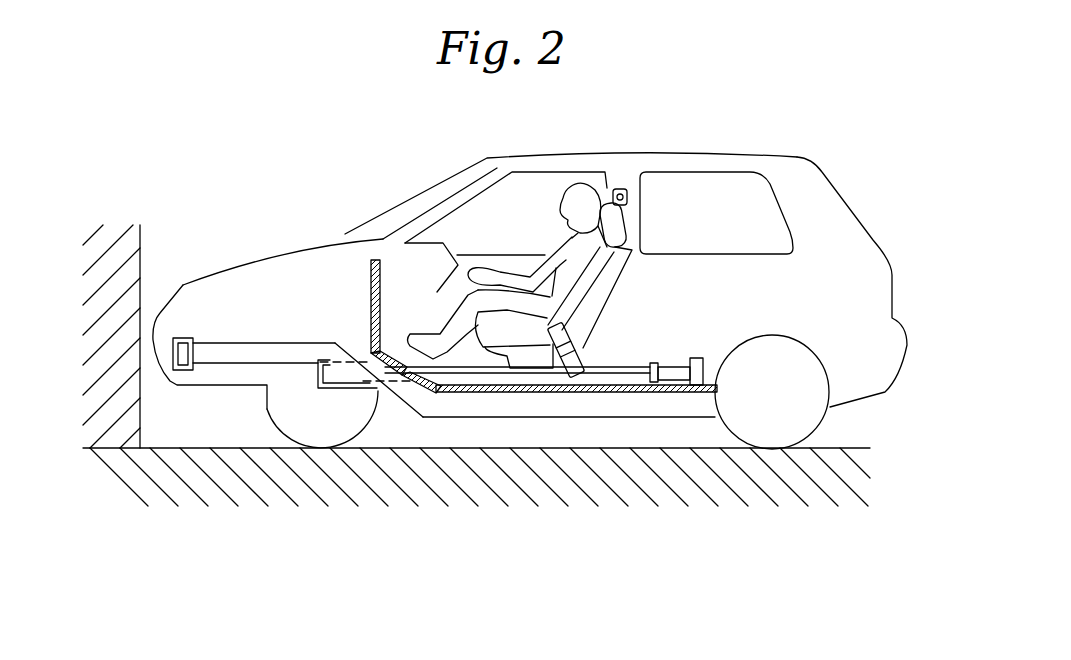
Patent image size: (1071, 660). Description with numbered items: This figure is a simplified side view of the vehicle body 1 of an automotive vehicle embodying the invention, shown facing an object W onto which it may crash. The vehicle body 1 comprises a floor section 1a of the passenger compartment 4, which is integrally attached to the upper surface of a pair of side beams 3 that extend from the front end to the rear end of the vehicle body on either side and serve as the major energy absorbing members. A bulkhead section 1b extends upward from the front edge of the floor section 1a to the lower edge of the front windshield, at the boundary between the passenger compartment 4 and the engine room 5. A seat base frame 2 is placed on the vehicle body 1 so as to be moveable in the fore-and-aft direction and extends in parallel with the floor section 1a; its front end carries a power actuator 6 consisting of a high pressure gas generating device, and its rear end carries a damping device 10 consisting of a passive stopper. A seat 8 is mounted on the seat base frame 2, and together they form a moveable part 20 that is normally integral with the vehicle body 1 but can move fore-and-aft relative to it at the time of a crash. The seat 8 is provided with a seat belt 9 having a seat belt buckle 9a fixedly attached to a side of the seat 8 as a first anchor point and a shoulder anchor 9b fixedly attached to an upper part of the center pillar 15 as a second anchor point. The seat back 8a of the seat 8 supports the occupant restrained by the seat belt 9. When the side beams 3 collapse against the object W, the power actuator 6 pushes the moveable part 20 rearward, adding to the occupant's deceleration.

The vehicle body 1 is at (667, 428).
The floor section 1a is at (590, 395).
The bulkhead section 1b is at (370, 275).
The seat base frame 2 is at (475, 373).
The side beams 3 is at (233, 362).
The passenger compartment 4 is at (735, 232).
The engine room 5 is at (292, 293).
The power actuator 6 is at (336, 378).
The seat 8 is at (525, 352).
The seat back 8a is at (612, 279).
The seat belt 9 is at (550, 325).
The seat belt buckle 9a is at (575, 356).
The shoulder anchor 9b is at (620, 189).
The damping device 10 is at (699, 343).
The center pillar 15 is at (632, 198).
The moveable part 20 is at (413, 548).
The object W is at (142, 285).